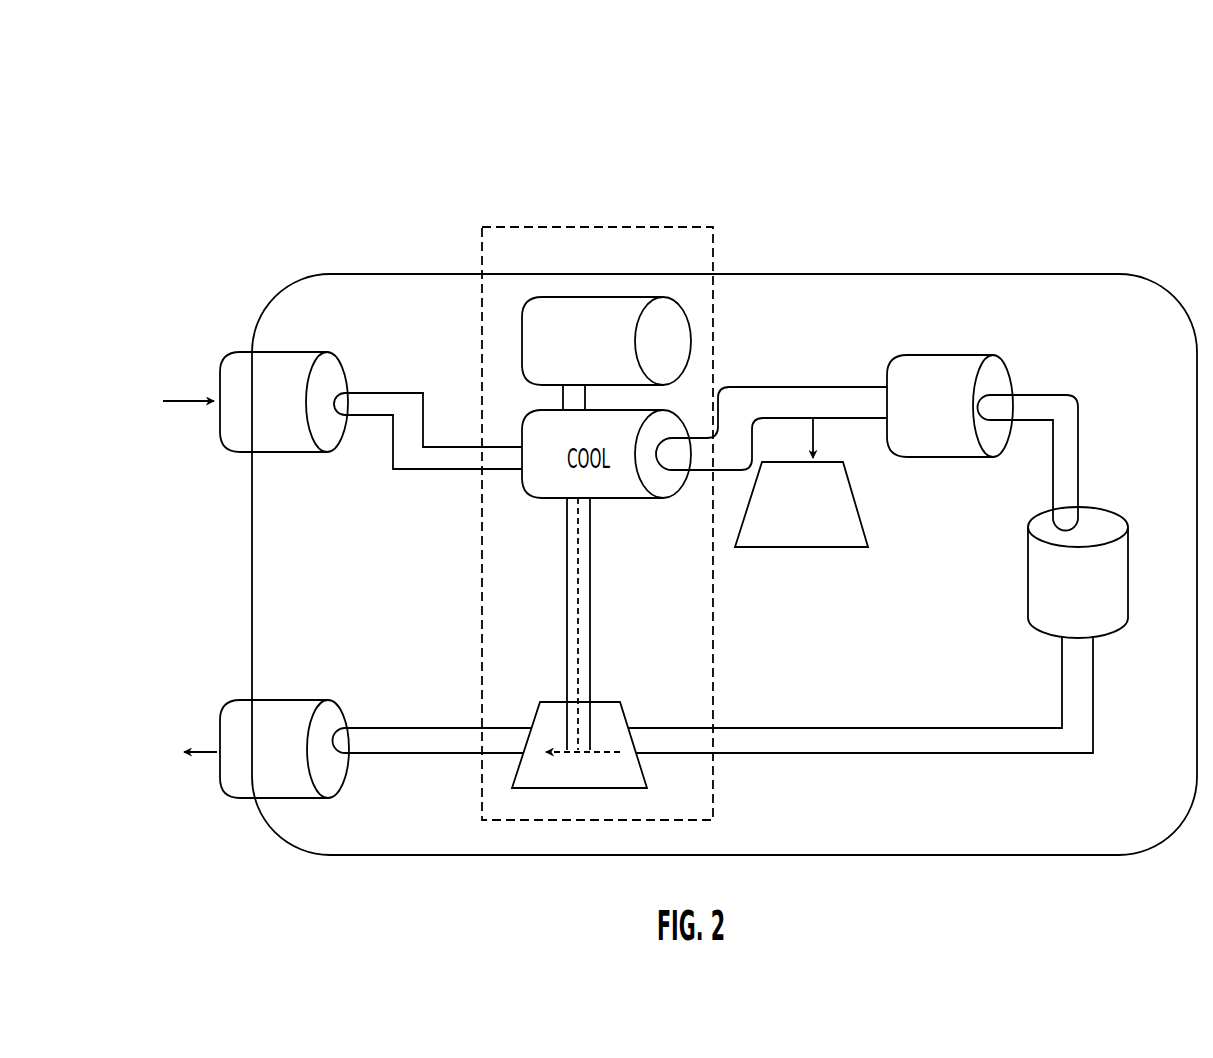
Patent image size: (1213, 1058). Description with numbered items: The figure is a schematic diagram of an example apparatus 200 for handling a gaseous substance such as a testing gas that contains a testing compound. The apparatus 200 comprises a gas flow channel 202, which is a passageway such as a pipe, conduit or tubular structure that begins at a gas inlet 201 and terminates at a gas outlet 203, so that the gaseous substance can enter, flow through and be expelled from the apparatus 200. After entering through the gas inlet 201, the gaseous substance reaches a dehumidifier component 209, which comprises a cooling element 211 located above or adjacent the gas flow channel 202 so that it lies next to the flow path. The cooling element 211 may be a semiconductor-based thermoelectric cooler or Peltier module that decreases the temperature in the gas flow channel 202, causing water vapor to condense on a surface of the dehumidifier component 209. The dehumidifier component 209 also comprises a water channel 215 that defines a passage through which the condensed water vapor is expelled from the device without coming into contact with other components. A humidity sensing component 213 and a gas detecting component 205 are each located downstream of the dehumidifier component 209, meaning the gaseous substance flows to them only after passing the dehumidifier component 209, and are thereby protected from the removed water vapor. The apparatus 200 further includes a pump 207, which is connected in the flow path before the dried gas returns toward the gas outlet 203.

The apparatus 200 is at (1009, 134).
The gas inlet 201 is at (267, 358).
The gas flow channel 202 is at (428, 433).
The gas outlet 203 is at (250, 705).
The gas detecting component 205 is at (960, 358).
The pump 207 is at (1104, 517).
The dehumidifier component 209 is at (630, 227).
The cooling element 211 is at (510, 345).
The humidity sensing component 213 is at (806, 548).
The water channel 215 is at (572, 657).